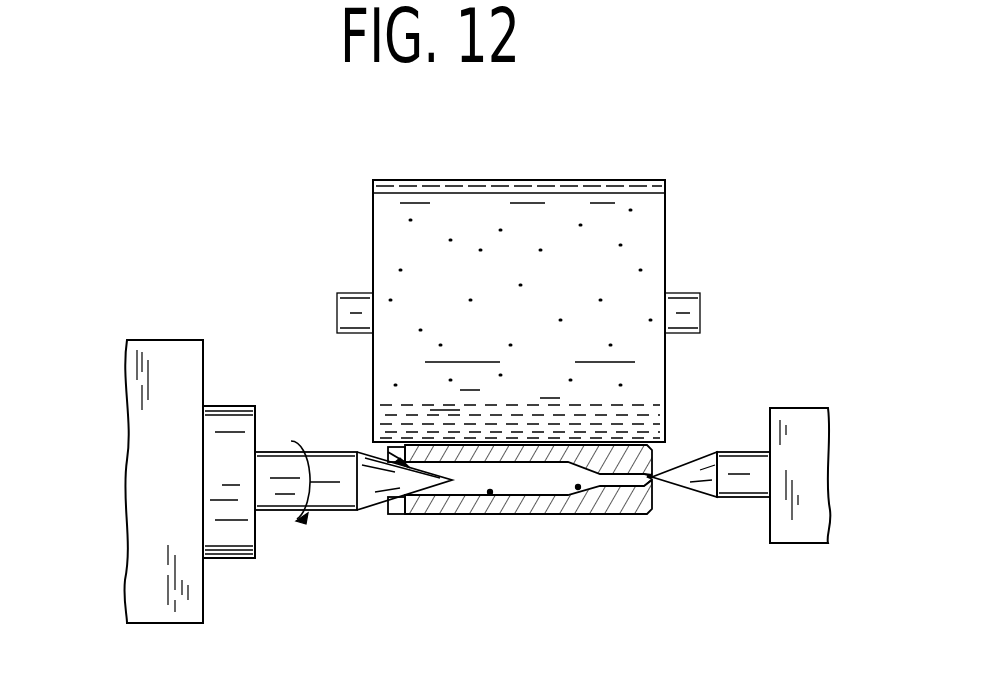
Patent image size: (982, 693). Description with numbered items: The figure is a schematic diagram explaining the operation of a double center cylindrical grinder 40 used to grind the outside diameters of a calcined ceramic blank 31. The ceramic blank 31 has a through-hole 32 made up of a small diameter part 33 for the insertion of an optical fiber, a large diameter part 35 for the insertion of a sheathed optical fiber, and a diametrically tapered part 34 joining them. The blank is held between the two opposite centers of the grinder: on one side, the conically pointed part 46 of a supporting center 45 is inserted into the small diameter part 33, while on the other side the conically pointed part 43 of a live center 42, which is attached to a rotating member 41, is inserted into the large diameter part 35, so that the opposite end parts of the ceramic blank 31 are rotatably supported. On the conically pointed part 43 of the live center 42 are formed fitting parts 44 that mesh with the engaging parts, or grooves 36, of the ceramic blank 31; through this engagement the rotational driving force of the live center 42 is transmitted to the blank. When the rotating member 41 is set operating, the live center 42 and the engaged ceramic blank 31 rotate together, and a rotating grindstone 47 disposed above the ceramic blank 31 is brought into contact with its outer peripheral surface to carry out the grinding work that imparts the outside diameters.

The ceramic blank 31 is at (567, 513).
The through-hole 32 is at (533, 482).
The small diameter part 33 is at (637, 487).
The diametrically tapered part 34 is at (579, 490).
The large diameter part 35 is at (489, 494).
The engaging parts (grooves) 36 is at (428, 511).
The double center cylindrical grinder 40 is at (137, 340).
The rotating member 41 is at (222, 405).
The live center 42 is at (272, 512).
The conically pointed part 43 is at (368, 453).
The fitting parts 44 is at (397, 515).
The supporting center 45 is at (732, 447).
The conically pointed part 46 is at (697, 486).
The rotating grindstone 47 is at (541, 178).